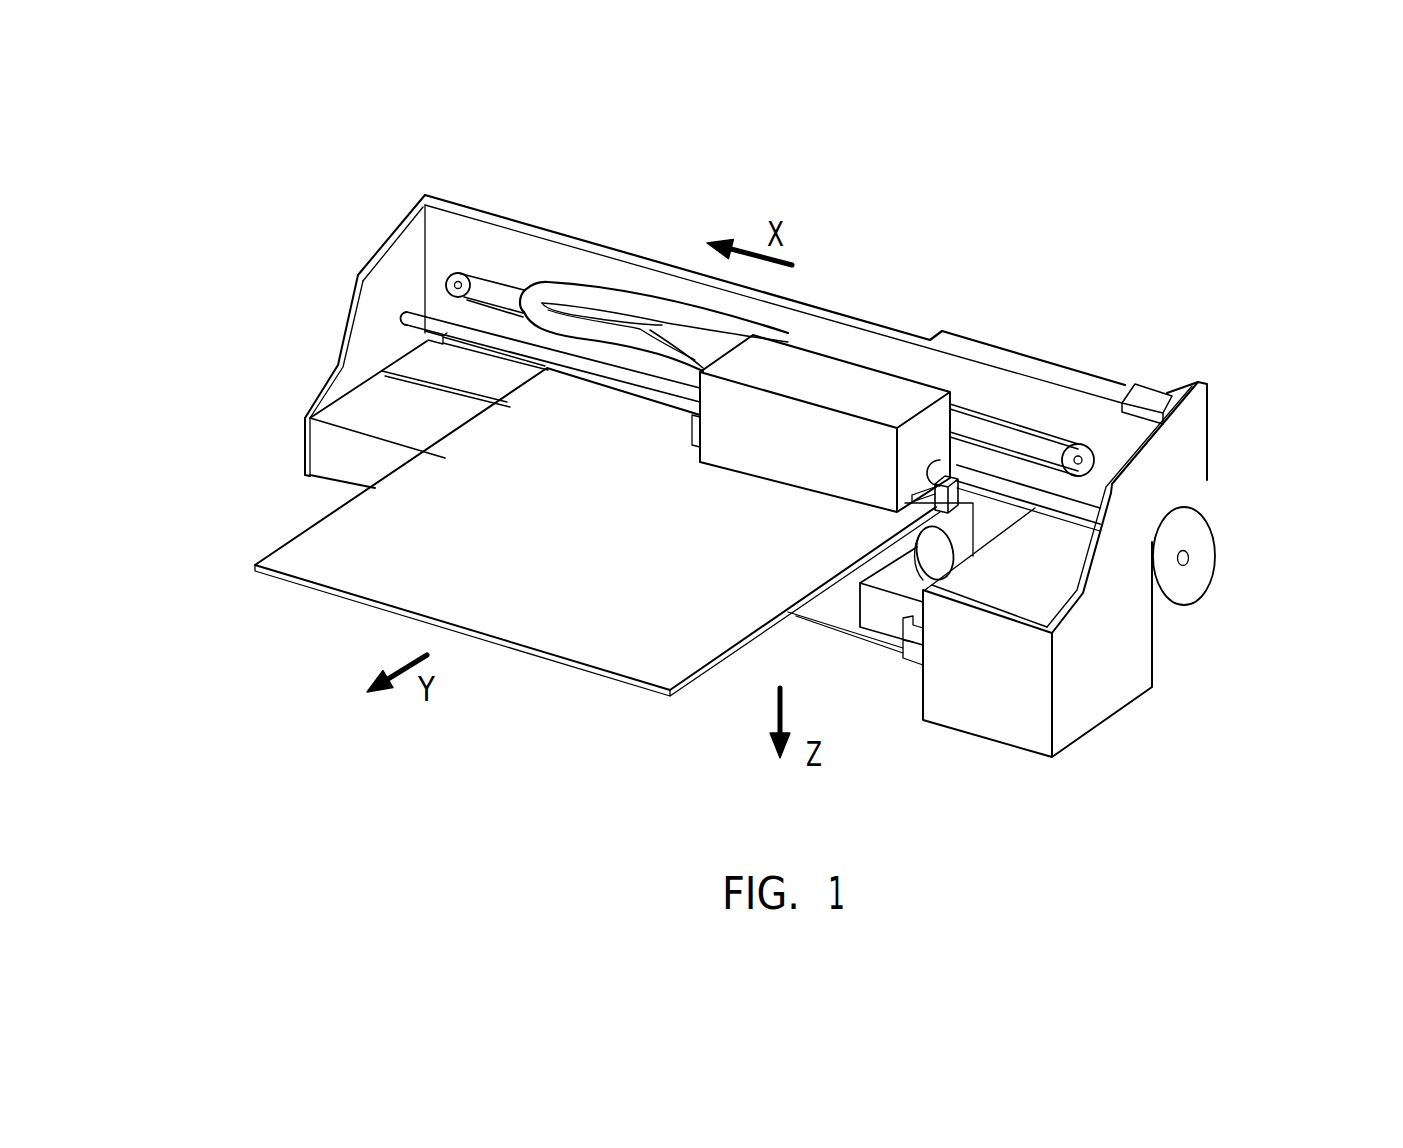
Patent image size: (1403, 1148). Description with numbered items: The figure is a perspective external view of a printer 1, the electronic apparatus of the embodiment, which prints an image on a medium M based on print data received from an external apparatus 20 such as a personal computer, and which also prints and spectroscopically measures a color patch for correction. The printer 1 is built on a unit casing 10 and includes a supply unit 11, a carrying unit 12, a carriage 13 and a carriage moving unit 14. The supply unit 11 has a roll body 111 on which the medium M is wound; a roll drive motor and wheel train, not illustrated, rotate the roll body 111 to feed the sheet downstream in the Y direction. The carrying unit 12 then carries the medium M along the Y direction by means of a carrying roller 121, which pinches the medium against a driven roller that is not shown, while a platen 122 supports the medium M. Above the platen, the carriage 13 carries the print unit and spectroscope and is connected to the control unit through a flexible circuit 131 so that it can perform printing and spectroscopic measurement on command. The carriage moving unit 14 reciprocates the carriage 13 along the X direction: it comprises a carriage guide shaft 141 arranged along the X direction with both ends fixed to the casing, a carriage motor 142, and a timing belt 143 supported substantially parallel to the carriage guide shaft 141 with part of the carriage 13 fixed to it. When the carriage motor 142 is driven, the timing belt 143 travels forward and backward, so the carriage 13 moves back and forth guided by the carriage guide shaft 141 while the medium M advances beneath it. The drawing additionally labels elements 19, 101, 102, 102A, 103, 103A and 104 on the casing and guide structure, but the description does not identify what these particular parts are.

The printer 1 is at (1010, 172).
The unit casing 10 is at (1198, 410).
The supply unit 11 is at (1247, 533).
The carrying unit 12 is at (958, 542).
The carriage 13 is at (803, 338).
The carriage moving unit 14 is at (1091, 432).
The bracket 19 is at (946, 484).
The external apparatus 20 is at (1016, 595).
The guide rail 101 is at (875, 633).
The right side plate 102 is at (1188, 460).
The chamfered portion of right side plate 102A is at (1139, 450).
The left side plate 103 is at (374, 262).
The chamfered portion of left side plate 103A is at (413, 247).
The top rail of frame 104 is at (651, 263).
The roll body 111 is at (1200, 575).
The carrying roller 121 is at (935, 567).
The platen 122 is at (386, 416).
The flexible circuit 131 is at (580, 295).
The carriage guide shaft 141 is at (1002, 487).
The carriage motor 142 is at (1060, 452).
The timing belt 143 is at (494, 277).
The medium M is at (397, 575).